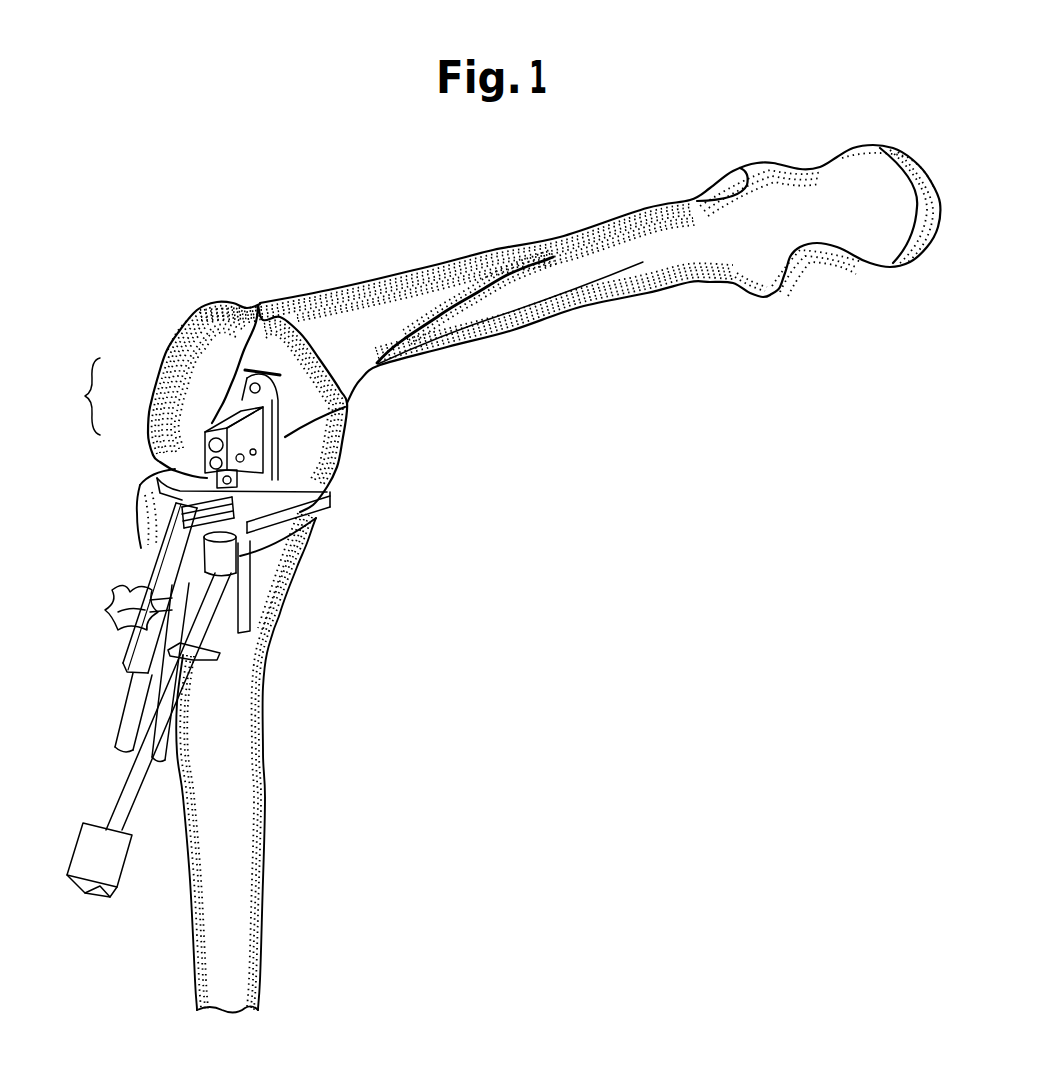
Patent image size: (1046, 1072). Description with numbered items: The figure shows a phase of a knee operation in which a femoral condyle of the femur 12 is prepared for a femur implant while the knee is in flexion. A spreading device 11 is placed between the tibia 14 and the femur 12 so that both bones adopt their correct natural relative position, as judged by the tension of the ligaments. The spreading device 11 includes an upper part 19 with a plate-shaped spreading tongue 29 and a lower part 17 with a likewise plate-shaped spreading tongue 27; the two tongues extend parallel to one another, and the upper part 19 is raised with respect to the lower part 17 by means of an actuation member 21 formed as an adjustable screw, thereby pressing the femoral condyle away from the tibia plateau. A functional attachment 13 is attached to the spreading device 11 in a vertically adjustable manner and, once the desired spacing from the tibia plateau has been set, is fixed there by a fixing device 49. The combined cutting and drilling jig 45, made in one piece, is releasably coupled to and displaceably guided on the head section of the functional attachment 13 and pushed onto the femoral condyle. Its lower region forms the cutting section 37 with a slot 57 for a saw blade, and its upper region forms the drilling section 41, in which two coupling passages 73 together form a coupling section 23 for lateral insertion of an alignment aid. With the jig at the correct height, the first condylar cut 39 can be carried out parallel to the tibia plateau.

The spreading device 11 is at (125, 490).
The femur 12 is at (551, 256).
The functional attachment 13 is at (139, 567).
The tibia 14 is at (240, 887).
The lower part 17 is at (220, 643).
The upper part 19 is at (258, 567).
The actuation member 21 is at (127, 783).
The coupling section 23 is at (263, 476).
The spreading tongue 27 is at (330, 507).
The spreading tongue 29 is at (300, 524).
The cutting section 37 is at (187, 478).
The first condylar cut 39 is at (348, 405).
The drilling section 41 is at (207, 432).
The combined cutting and drilling jig 45 is at (77, 396).
The fixing device 49 is at (114, 604).
The slot 57 is at (170, 510).
The coupling passages 73 is at (256, 452).